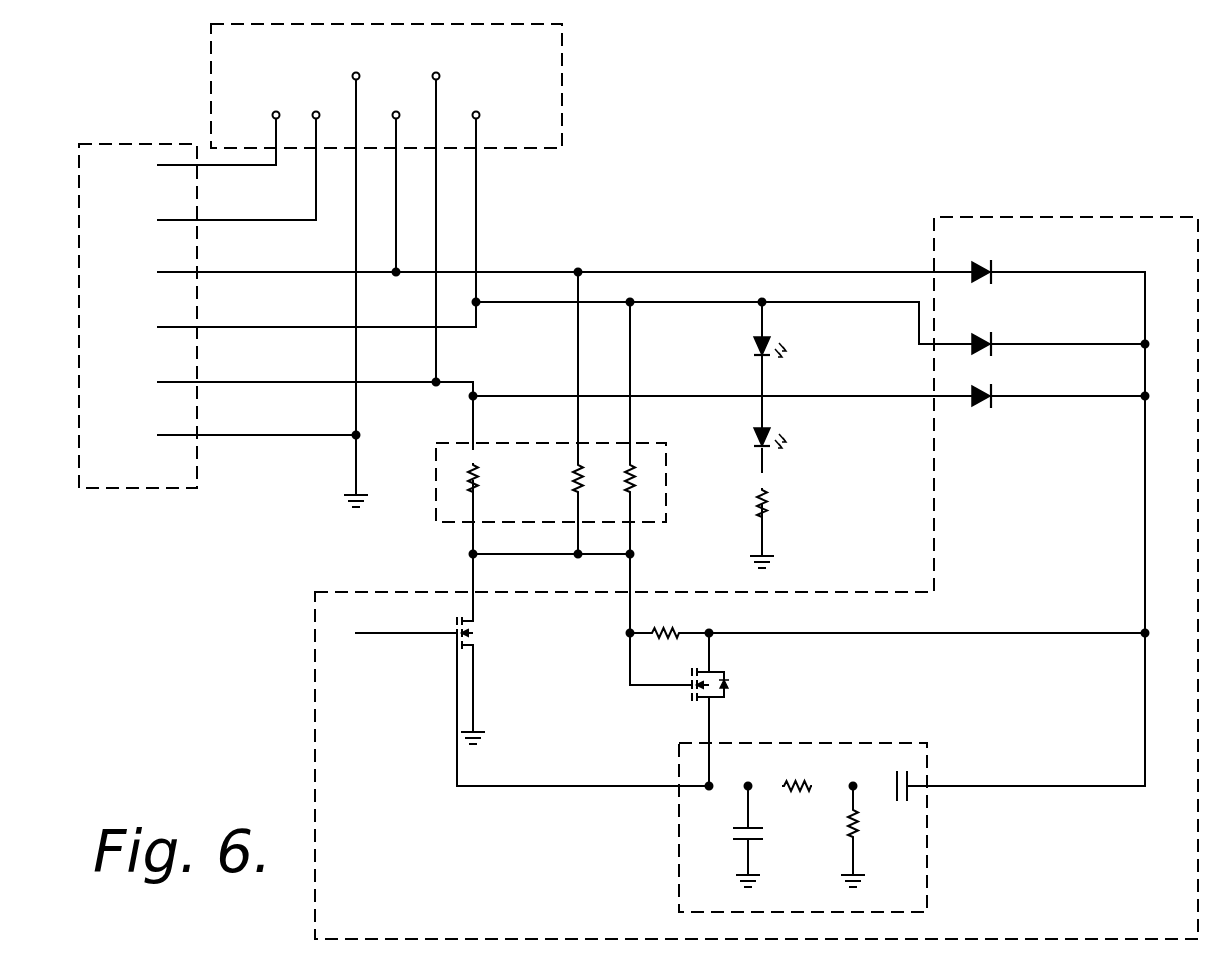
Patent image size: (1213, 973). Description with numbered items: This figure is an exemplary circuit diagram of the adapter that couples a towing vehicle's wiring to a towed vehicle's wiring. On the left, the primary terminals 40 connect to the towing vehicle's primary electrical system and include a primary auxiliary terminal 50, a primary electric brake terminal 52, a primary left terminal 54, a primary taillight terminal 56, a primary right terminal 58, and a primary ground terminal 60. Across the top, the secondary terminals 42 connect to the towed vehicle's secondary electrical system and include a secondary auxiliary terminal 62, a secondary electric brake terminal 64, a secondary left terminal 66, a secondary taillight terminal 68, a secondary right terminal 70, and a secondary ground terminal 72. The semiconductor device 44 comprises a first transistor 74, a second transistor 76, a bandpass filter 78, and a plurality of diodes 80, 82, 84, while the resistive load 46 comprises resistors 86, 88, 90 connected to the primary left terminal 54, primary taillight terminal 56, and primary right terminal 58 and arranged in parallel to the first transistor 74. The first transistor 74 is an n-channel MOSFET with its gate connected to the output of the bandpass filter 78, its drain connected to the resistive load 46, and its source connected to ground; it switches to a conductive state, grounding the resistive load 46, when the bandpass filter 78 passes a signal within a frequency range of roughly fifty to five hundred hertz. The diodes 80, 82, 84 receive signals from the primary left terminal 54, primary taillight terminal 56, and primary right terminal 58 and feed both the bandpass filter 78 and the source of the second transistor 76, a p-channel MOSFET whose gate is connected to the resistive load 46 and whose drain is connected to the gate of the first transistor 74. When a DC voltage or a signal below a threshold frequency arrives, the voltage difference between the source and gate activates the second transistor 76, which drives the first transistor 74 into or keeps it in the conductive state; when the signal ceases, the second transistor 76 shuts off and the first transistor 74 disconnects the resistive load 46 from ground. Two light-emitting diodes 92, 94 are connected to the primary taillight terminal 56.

The primary terminals 40 is at (112, 143).
The secondary terminals 42 is at (563, 60).
The semiconductor device 44 is at (316, 682).
The resistive load 46 is at (437, 523).
The primary auxiliary terminal 50 is at (178, 165).
The primary electric brake terminal 52 is at (178, 220).
The primary left terminal 54 is at (180, 272).
The primary taillight terminal 56 is at (180, 327).
The primary right terminal 58 is at (180, 382).
The primary ground terminal 60 is at (176, 435).
The secondary auxiliary terminal 62 is at (274, 112).
The secondary electric brake terminal 64 is at (315, 112).
The secondary left terminal 66 is at (358, 73).
The secondary taillight terminal 68 is at (397, 112).
The secondary right terminal 70 is at (439, 74).
The secondary ground terminal 72 is at (478, 112).
The first transistor 74 is at (478, 636).
The second transistor 76 is at (722, 672).
The bandpass filter 78 is at (905, 743).
The first diode 80 is at (975, 260).
The second diode 82 is at (977, 334).
The third diode 84 is at (978, 406).
The first resistor 86 is at (478, 488).
The second resistor 88 is at (575, 470).
The third resistor 90 is at (635, 488).
The first light-emitting diode 92 is at (770, 344).
The second light-emitting diode 94 is at (770, 436).